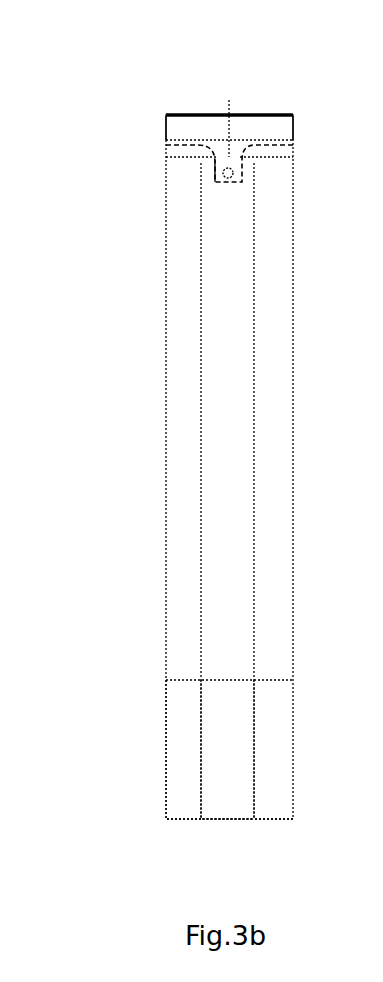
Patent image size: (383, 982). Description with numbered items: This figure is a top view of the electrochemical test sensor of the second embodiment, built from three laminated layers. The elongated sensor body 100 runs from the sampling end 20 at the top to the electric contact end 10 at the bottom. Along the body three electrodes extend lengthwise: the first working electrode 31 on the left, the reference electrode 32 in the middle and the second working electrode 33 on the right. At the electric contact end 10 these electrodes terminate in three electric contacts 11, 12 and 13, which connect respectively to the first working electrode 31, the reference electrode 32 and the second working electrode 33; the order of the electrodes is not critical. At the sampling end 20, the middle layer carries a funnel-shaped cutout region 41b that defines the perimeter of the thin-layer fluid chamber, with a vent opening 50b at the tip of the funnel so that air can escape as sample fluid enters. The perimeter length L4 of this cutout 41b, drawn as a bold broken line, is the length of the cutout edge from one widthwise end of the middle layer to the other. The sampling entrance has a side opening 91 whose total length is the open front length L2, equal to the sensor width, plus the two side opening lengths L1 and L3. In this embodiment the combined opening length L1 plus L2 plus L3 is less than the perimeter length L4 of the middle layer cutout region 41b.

The sensor body 100 is at (183, 479).
The side opening 91 is at (229, 134).
The middle layer cutout region 41b is at (228, 106).
The side opening length L1 is at (166, 140).
The open front length L2 is at (260, 113).
The side opening length L3 is at (293, 140).
The perimeter length L4 is at (217, 167).
The sampling end 20 is at (186, 175).
The vent opening 50b is at (237, 193).
The first working electrode 31 is at (183, 277).
The reference electrode 32 is at (227, 297).
The second working electrode 33 is at (273, 237).
The electric contact end 10 is at (186, 726).
The electric contact 11 is at (178, 776).
The electric contact 12 is at (227, 776).
The electric contact 13 is at (274, 776).